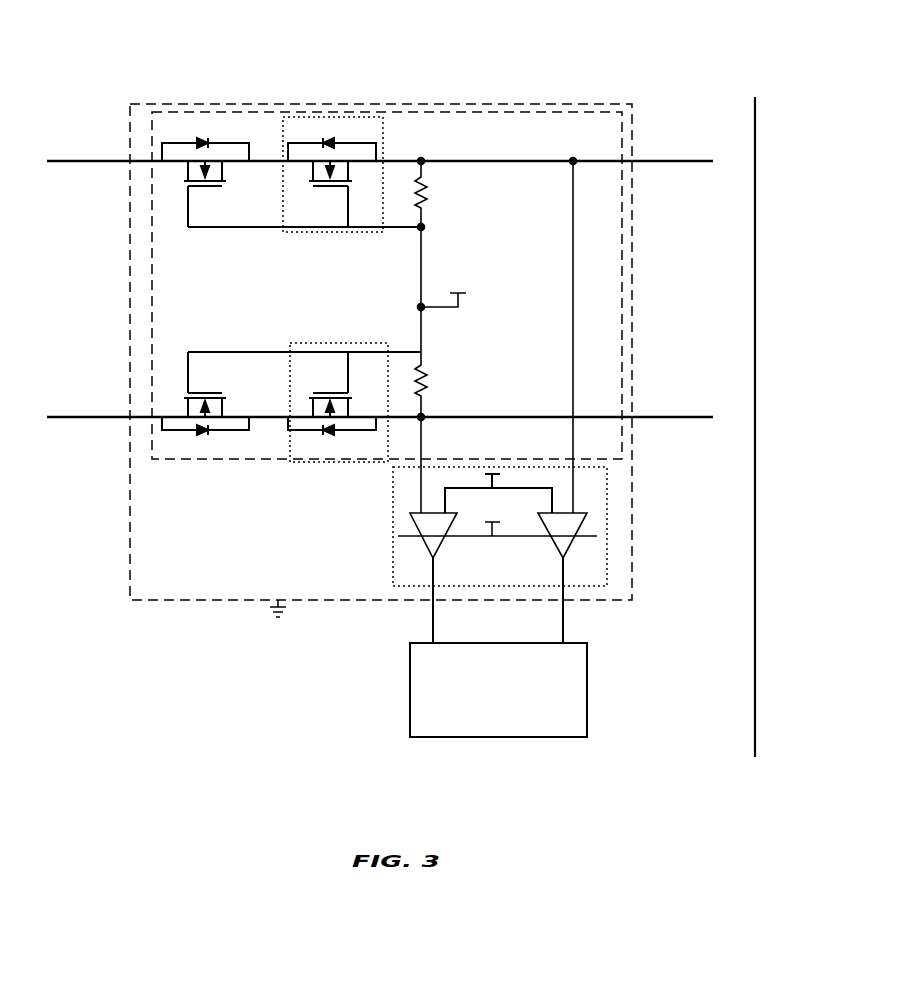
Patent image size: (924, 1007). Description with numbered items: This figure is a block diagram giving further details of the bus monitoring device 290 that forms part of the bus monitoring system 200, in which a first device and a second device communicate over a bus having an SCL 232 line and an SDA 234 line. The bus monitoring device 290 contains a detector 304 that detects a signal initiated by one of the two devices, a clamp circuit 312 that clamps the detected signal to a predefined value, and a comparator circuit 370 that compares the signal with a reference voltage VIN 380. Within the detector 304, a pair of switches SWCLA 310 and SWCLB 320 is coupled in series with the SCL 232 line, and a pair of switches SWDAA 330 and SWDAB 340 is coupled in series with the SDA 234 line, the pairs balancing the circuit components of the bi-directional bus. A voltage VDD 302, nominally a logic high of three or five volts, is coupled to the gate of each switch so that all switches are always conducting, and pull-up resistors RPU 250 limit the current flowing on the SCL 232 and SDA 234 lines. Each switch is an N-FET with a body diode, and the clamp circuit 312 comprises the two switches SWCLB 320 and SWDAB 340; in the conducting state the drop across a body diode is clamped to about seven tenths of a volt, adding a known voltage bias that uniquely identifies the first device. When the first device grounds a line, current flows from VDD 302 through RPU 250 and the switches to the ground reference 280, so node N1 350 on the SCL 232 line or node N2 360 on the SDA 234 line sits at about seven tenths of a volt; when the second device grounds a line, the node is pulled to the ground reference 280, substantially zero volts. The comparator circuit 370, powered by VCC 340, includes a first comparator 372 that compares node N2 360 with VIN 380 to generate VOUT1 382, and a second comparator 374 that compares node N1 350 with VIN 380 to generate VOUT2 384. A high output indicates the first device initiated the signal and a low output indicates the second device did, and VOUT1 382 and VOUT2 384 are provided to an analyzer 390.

The bus monitoring system 200 is at (775, 100).
The SCL line 232 is at (708, 156).
The SDA line 234 is at (702, 419).
The pull-up resistor RPU 250 is at (453, 289).
The ground reference 280 is at (285, 604).
The bus monitoring device 290 is at (258, 601).
The voltage VDD 302 is at (462, 287).
The detector 304 is at (473, 112).
The switch SWCLA 310 is at (206, 171).
The clamp circuit 312 is at (315, 342).
The switch SWCLB 320 is at (333, 174).
The switch SWDAA 330 is at (207, 406).
The switch SWDAB 340 is at (409, 439).
The node N1 350 is at (573, 155).
The node N2 360 is at (421, 417).
The comparator circuit 370 is at (607, 492).
The first comparator 372 is at (428, 540).
The second comparator 374 is at (553, 540).
The reference voltage VIN 380 is at (517, 455).
The output VOUT1 382 is at (433, 612).
The output VOUT2 384 is at (563, 612).
The analyzer 390 is at (517, 709).